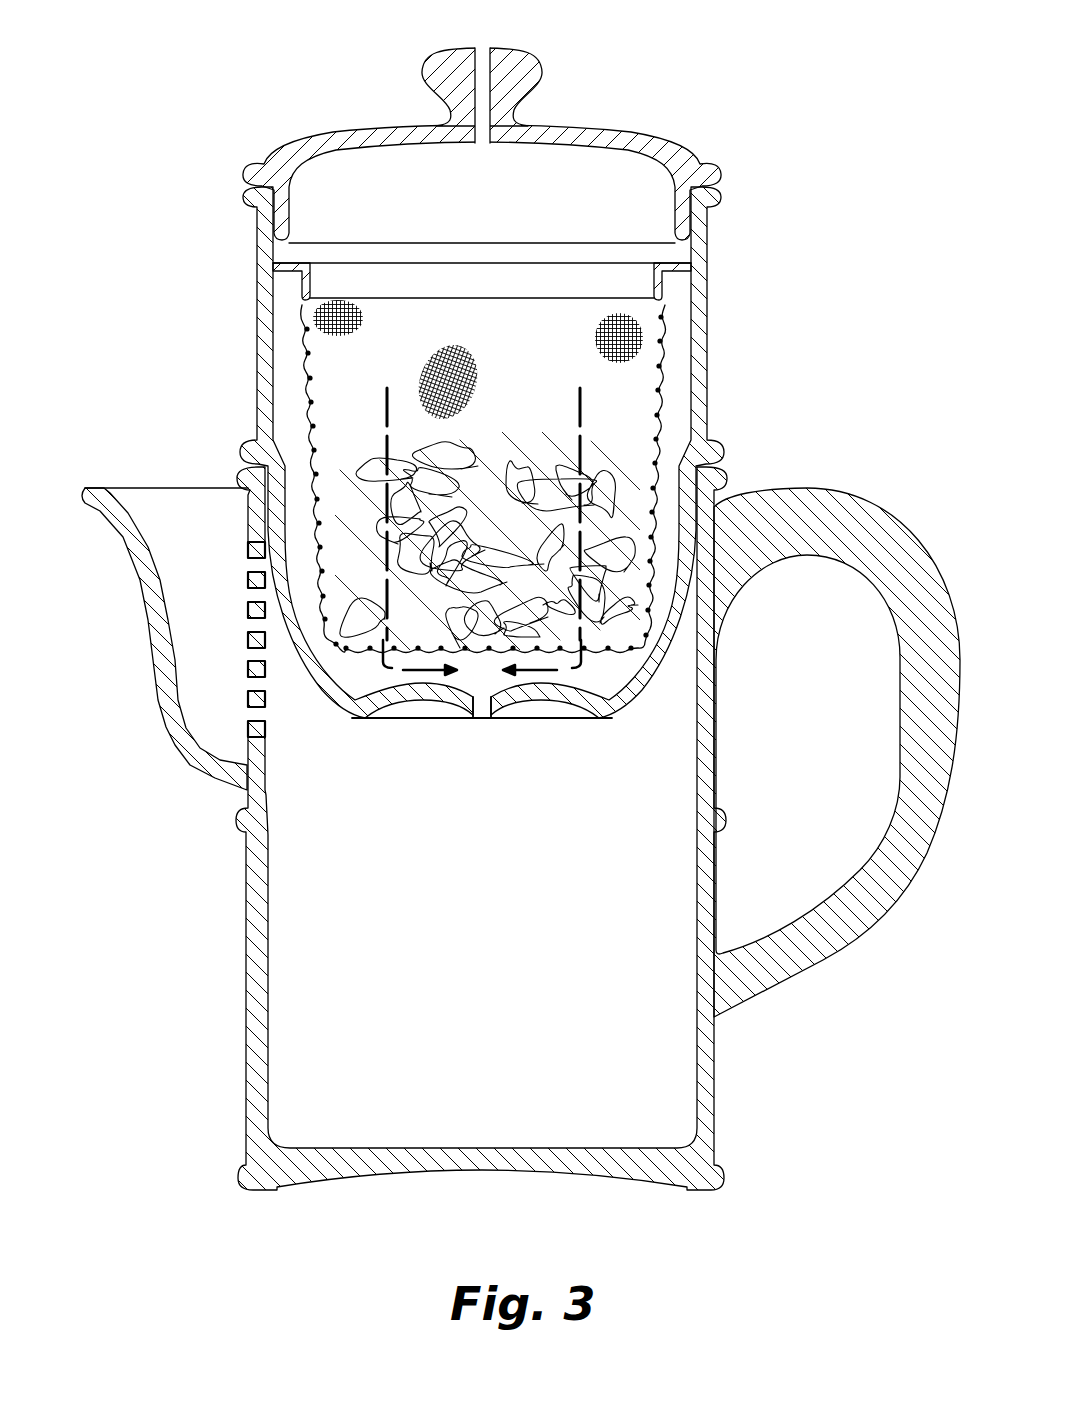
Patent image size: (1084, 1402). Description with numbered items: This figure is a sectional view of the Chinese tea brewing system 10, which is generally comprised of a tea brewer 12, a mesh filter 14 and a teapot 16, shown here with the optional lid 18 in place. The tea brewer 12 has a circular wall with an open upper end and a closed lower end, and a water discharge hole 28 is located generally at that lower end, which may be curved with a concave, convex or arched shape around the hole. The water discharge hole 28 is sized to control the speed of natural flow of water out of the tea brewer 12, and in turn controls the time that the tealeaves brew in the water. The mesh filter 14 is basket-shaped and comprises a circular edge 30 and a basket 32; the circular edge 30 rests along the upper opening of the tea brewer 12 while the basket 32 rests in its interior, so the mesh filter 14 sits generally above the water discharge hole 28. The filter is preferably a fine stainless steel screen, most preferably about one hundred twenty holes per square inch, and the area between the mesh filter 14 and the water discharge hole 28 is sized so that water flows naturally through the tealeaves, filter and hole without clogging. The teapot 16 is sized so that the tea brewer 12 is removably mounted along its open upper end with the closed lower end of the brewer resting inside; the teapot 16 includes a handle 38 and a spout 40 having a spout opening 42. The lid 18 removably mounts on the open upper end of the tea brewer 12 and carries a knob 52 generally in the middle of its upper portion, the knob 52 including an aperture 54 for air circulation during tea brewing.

The Chinese tea brewing system 10 is at (826, 198).
The tea brewer 12 is at (700, 420).
The mesh filter 14 is at (660, 377).
The teapot 16 is at (703, 1071).
The lid 18 is at (657, 132).
The water discharge hole 28 is at (482, 720).
The circular edge 30 is at (673, 268).
The basket 32 is at (305, 375).
The handle 38 is at (875, 515).
The spout 40 is at (165, 693).
The spout opening 42 is at (255, 533).
The knob 52 is at (523, 68).
The aperture 54 is at (484, 60).